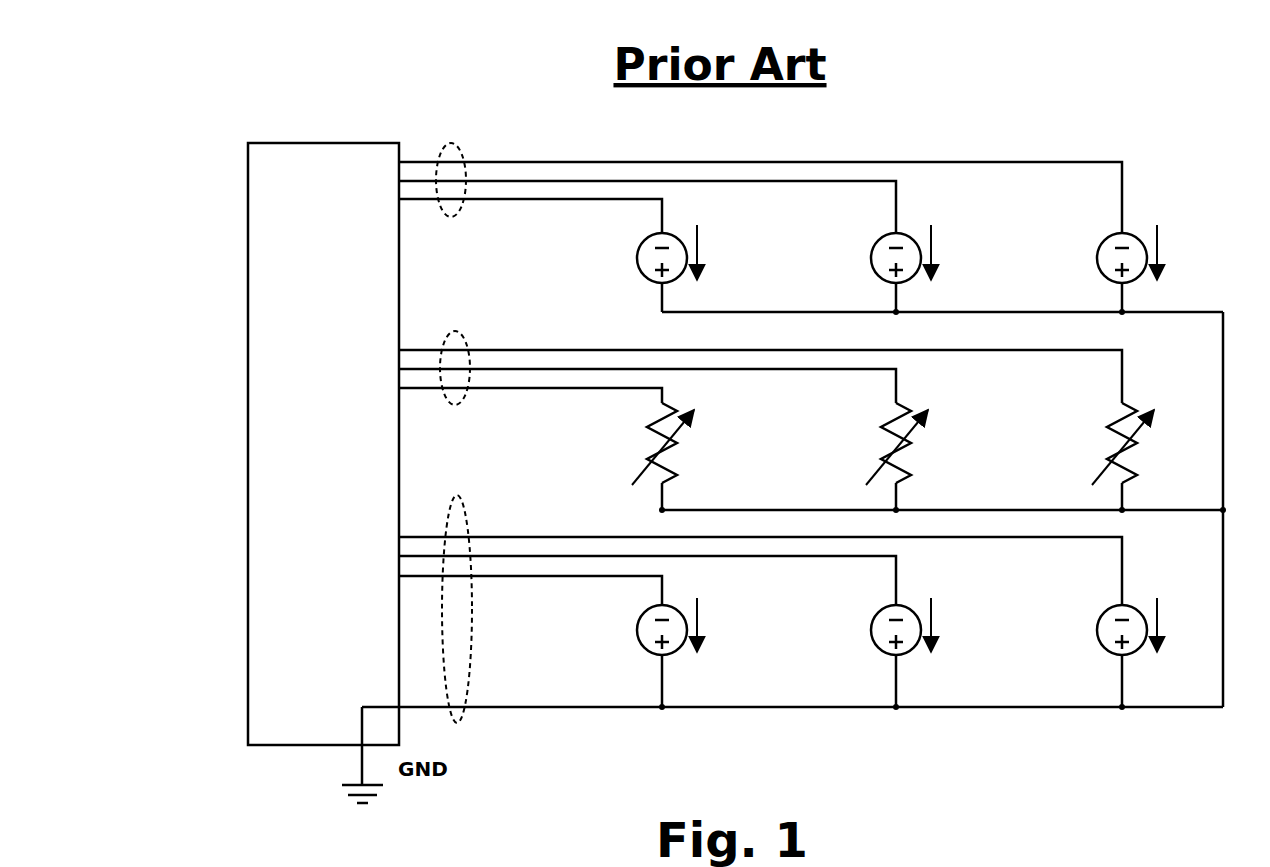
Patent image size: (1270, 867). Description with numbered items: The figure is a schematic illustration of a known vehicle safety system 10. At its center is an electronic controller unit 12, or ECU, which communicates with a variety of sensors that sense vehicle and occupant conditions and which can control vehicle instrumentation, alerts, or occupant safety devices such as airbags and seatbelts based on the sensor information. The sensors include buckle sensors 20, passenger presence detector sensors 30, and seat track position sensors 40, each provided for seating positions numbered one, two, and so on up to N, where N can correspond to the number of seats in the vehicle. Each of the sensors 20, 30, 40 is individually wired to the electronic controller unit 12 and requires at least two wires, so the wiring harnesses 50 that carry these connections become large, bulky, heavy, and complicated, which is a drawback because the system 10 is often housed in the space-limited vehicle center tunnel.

The vehicle safety system 10 is at (215, 92).
The electronic controller unit 12 is at (277, 265).
The buckle sensor 20 is at (672, 233).
The passenger presence detector sensor 30 is at (678, 410).
The seat track position sensor 40 is at (675, 655).
The wiring harness 50 is at (465, 150).